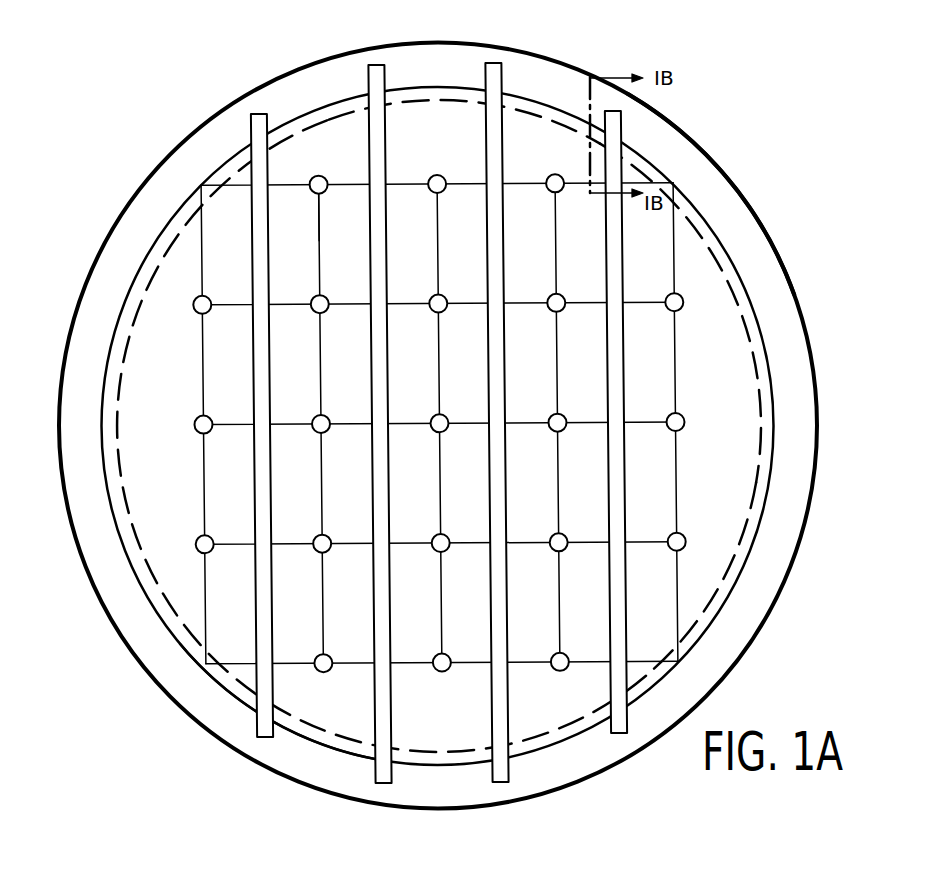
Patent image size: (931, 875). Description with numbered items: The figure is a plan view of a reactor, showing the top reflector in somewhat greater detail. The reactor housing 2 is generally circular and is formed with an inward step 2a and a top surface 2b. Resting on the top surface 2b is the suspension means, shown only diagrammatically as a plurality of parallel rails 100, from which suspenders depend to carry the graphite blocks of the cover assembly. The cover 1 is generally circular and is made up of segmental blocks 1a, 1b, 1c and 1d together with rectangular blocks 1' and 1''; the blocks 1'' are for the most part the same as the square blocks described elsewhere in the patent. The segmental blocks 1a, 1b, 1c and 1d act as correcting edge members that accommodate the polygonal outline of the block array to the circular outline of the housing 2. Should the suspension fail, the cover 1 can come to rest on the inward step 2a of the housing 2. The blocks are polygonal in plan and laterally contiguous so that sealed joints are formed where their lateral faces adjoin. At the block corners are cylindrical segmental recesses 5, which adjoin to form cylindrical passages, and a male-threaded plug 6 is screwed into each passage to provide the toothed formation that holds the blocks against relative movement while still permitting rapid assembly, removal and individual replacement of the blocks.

The cover 1 is at (438, 474).
The segmental block 1a is at (710, 605).
The segmental block 1b is at (333, 747).
The segmental block 1c is at (148, 566).
The segmental block 1d is at (445, 142).
The rectangular block 1' is at (455, 423).
The rectangular block 1'' is at (454, 442).
The housing 2 is at (568, 83).
The inward step 2a is at (540, 113).
The top surface 2b is at (728, 205).
The recess 5 is at (323, 178).
The male-threaded plug 6 is at (327, 191).
The rail 100 is at (377, 82).